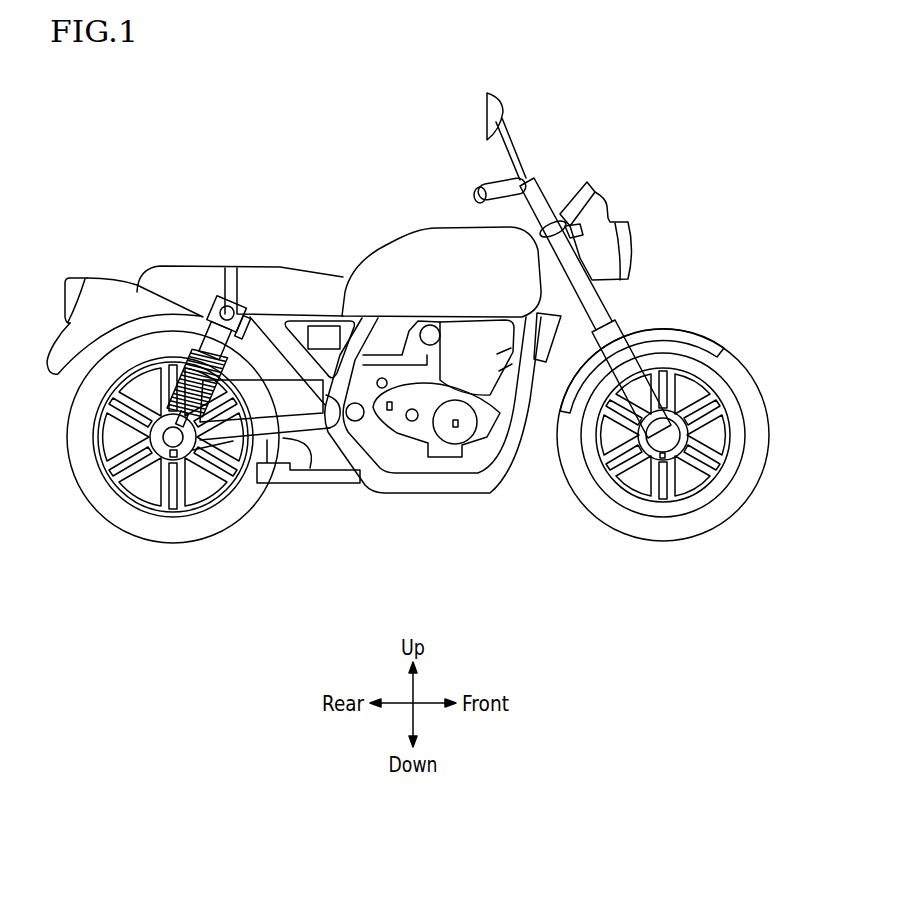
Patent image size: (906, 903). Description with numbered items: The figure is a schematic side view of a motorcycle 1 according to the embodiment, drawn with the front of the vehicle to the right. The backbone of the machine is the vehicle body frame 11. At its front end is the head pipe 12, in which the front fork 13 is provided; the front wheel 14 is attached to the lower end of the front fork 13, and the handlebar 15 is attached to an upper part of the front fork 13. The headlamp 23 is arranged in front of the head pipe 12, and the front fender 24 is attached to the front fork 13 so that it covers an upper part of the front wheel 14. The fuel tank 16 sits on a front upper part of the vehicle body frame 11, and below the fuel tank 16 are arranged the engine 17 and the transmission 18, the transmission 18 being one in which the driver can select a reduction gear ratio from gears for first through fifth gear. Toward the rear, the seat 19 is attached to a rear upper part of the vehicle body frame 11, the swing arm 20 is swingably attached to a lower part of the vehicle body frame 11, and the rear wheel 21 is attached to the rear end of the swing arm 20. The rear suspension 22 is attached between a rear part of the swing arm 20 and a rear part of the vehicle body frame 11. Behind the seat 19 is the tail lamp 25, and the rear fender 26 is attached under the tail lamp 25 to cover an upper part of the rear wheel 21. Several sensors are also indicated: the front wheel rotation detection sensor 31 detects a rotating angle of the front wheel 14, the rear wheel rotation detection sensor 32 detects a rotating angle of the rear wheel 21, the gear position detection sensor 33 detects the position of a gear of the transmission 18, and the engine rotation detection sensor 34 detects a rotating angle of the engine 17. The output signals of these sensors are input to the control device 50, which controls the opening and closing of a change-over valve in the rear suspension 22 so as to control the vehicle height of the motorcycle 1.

The motorcycle 1 is at (630, 115).
The vehicle body frame 11 is at (273, 323).
The head pipe 12 is at (597, 312).
The front fork 13 is at (637, 388).
The front wheel 14 is at (660, 520).
The handlebar 15 is at (494, 181).
The fuel tank 16 is at (415, 230).
The engine 17 is at (479, 440).
The transmission 18 is at (389, 410).
The seat 19 is at (247, 270).
The swing arm 20 is at (263, 430).
The rear wheel 21 is at (133, 522).
The rear suspension 22 is at (194, 321).
The headlamp 23 is at (630, 224).
The front fender 24 is at (680, 326).
The tail lamp 25 is at (73, 278).
The rear fender 26 is at (110, 283).
The front wheel rotation detection sensor 31 is at (672, 458).
The rear wheel rotation detection sensor 32 is at (173, 458).
The gear position detection sensor 33 is at (367, 422).
The engine rotation detection sensor 34 is at (455, 428).
The control device 50 is at (322, 333).